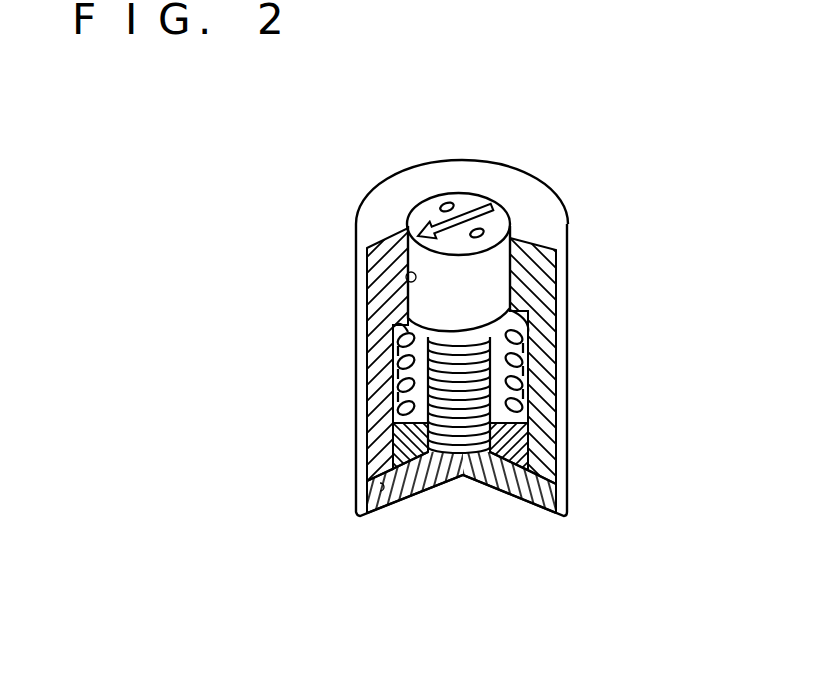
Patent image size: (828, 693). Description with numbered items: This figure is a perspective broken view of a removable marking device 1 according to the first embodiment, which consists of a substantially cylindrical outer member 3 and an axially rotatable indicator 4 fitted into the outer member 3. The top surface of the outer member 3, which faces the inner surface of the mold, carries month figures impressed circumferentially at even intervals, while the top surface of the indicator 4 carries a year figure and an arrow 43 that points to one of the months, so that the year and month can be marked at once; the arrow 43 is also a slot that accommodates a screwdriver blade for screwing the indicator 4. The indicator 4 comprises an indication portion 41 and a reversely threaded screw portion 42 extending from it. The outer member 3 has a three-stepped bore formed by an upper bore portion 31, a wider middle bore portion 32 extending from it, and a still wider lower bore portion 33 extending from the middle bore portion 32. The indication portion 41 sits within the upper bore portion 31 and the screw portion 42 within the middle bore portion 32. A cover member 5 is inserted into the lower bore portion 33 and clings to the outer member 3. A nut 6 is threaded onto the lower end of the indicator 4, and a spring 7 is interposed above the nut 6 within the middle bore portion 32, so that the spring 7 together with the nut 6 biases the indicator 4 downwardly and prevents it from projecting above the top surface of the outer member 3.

The removable marking device 1 is at (549, 134).
The outer member 3 is at (451, 338).
The upper bore portion 31 is at (405, 286).
The middle bore portion 32 is at (400, 383).
The lower bore portion 33 is at (385, 494).
The indicator 4 is at (496, 308).
The indication portion 41 is at (490, 292).
The screw portion 42 is at (486, 343).
The arrow 43 is at (366, 205).
The cover member 5 is at (535, 490).
The nut 6 is at (527, 446).
The spring 7 is at (527, 378).